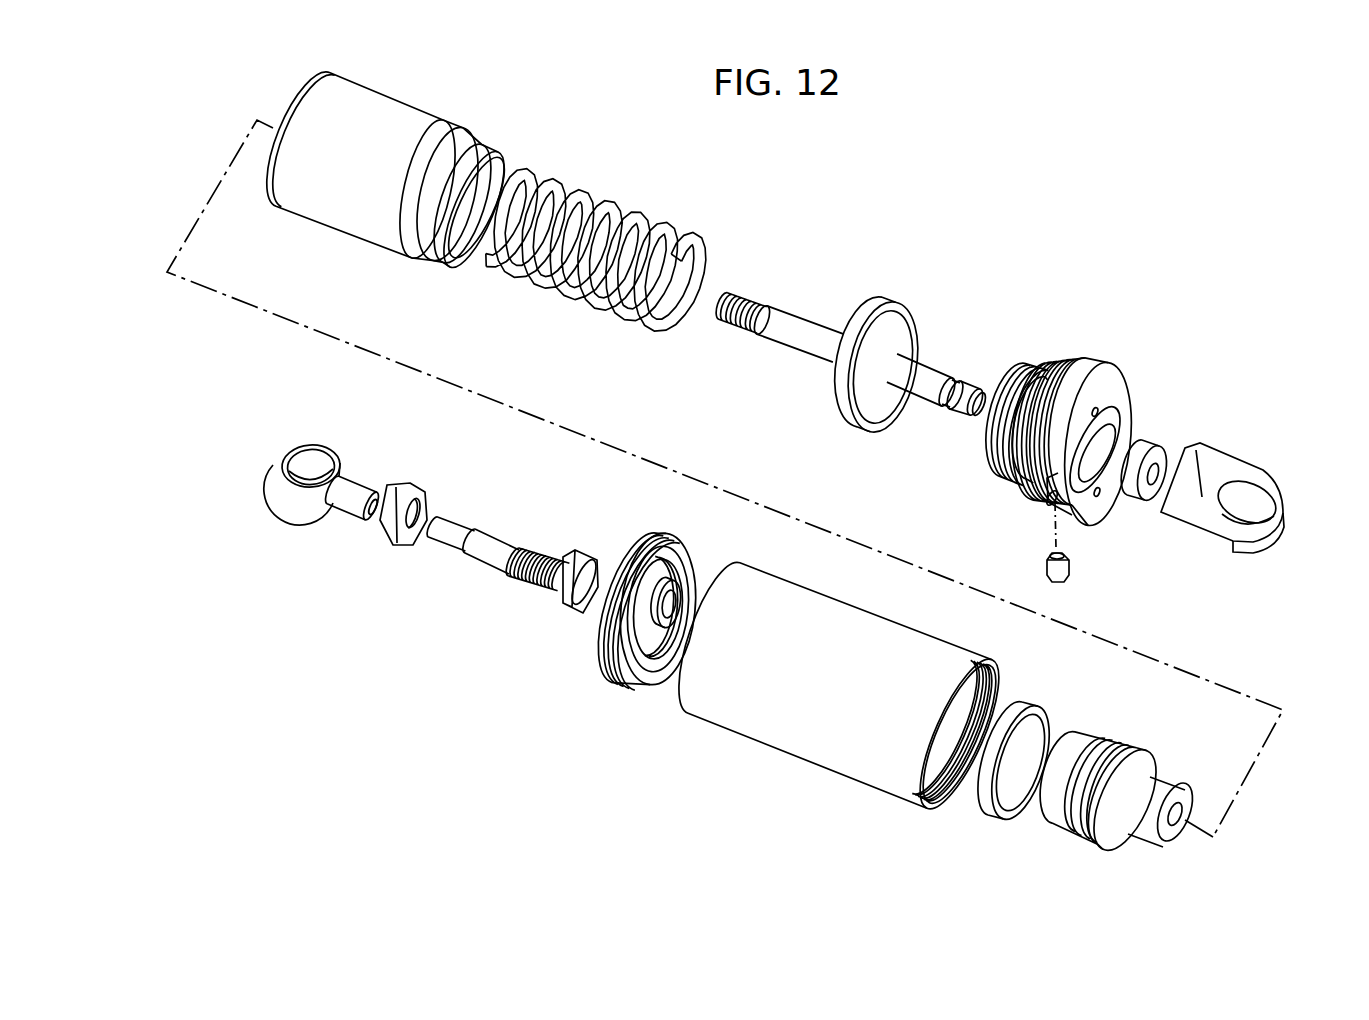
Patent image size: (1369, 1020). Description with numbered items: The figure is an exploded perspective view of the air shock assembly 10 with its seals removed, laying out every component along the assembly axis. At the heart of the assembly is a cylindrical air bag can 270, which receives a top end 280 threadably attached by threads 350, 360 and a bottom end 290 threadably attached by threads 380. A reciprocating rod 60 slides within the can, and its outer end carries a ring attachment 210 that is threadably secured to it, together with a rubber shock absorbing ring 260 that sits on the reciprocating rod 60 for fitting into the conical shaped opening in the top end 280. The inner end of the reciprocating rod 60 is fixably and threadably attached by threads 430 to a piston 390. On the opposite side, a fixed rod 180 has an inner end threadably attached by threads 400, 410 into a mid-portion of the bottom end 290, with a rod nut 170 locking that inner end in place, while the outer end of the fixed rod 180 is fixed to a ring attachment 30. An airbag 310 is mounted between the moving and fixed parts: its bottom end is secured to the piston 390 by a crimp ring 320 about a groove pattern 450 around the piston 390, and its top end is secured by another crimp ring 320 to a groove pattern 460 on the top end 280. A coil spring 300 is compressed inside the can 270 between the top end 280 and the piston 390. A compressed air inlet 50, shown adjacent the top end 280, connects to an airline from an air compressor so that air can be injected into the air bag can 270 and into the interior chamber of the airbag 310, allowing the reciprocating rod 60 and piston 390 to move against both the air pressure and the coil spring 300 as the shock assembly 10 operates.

The air shock assembly 10 is at (967, 162).
The ring attachment 30 is at (297, 502).
The compressed air inlet 50 is at (1068, 573).
The reciprocating rod 60 is at (920, 367).
The rod nut 170 is at (388, 538).
The fixed rod 180 is at (490, 555).
The ring attachment 210 is at (1230, 474).
The rubber shock absorbing ring 260 is at (1145, 448).
The cylindrical air bag can 270 is at (747, 725).
The top end 280 is at (1097, 375).
The bottom end 290 is at (602, 673).
The coil spring 300 is at (657, 228).
The airbag 310 is at (403, 112).
The crimp ring 320 is at (892, 305).
The threads 350 is at (993, 678).
The threads 360 is at (1075, 365).
The threads 380 is at (630, 680).
The piston 390 is at (1048, 803).
The threads 400 is at (542, 587).
The threads 410 is at (670, 592).
The threads 430 is at (757, 307).
The groove pattern 450 is at (1082, 830).
The groove pattern 460 is at (1038, 362).